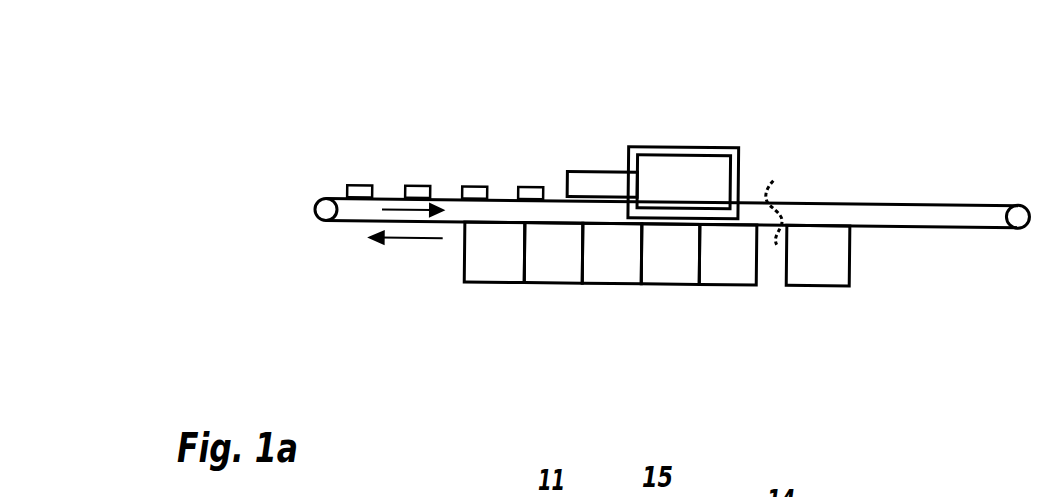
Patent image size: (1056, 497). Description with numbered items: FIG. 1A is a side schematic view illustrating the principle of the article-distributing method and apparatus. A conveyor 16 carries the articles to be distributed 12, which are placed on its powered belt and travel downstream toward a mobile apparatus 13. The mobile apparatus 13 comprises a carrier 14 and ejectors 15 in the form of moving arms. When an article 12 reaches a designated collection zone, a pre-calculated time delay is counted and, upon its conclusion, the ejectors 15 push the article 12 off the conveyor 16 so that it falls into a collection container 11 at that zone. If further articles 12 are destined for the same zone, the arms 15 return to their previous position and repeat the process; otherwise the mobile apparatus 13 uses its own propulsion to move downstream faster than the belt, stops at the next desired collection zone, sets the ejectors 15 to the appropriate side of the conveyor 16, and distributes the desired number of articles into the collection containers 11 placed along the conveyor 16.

The collection container 11 is at (610, 268).
The articles to be distributed 12 is at (358, 185).
The mobile apparatus 13 is at (740, 148).
The carrier 14 is at (687, 150).
The ejectors 15 is at (593, 171).
The conveyor 16 is at (870, 203).